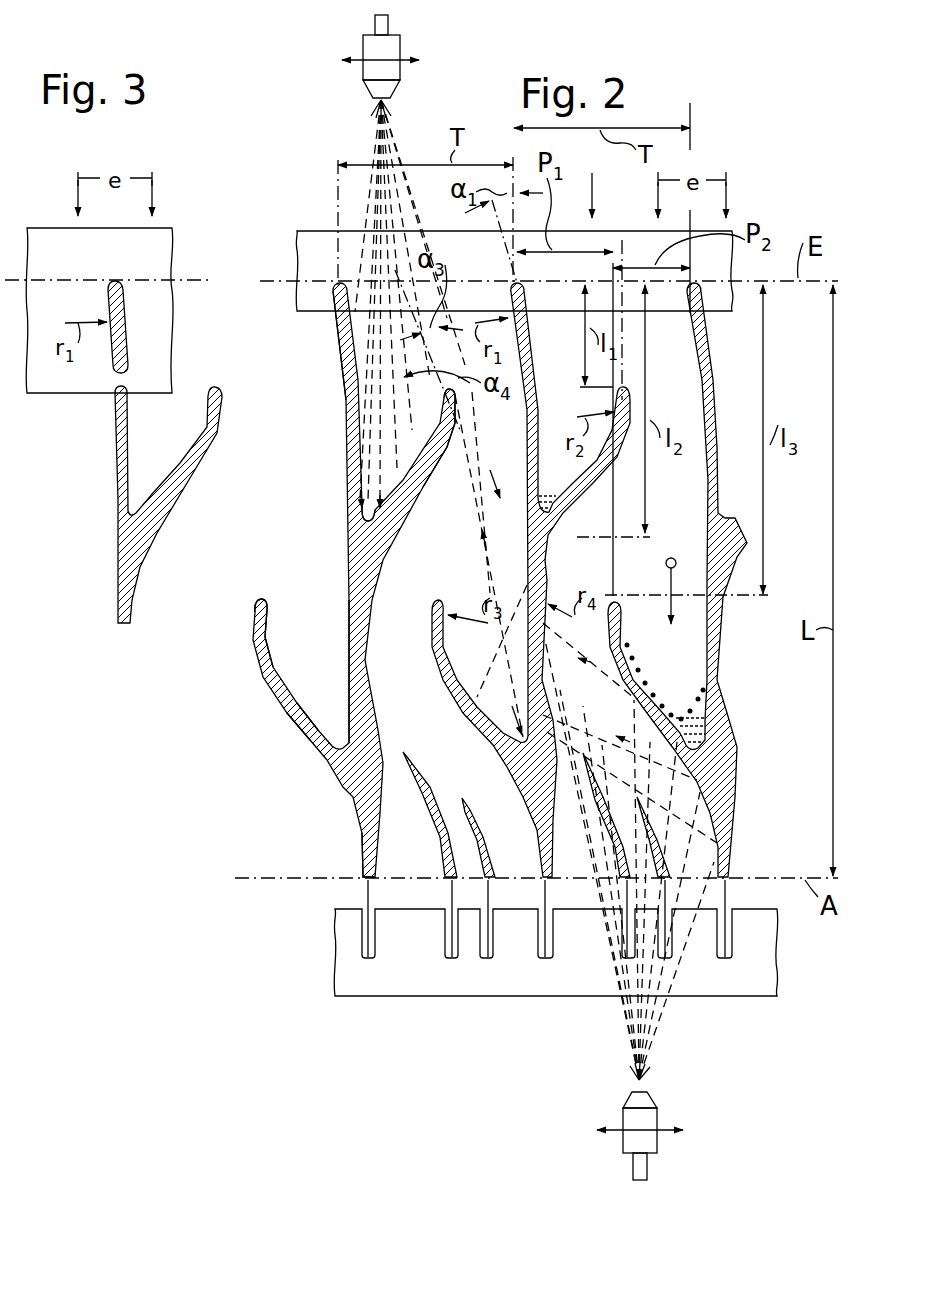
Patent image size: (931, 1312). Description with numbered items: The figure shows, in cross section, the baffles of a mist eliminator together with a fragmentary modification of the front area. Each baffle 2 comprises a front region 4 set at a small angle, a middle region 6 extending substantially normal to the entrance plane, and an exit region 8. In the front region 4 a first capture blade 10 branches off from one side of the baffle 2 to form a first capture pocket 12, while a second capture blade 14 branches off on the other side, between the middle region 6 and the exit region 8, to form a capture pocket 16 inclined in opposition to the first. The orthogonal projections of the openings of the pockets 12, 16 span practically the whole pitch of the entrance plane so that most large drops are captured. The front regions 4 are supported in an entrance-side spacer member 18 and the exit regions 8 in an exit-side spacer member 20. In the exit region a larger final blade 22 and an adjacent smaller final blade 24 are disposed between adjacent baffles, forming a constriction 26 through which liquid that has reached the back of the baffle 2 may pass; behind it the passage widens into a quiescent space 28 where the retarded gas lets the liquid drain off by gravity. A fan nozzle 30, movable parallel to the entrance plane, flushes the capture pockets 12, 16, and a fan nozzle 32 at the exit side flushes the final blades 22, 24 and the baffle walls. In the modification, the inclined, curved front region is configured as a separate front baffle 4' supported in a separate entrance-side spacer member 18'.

In FIG. 2, the baffle 2 is at (344, 540).
In FIG. 2, the front region 4 is at (324, 345).
In FIG. 2, the middle region 6 is at (352, 631).
In FIG. 2, the exit region 8 is at (367, 838).
In FIG. 2, the first capture blade 10 is at (430, 464).
In FIG. 2, the first capture pocket 12 is at (380, 490).
In FIG. 2, the second capture blade 14 is at (262, 657).
In FIG. 2, the capture pocket 16 is at (308, 740).
In FIG. 2, the entrance-side spacer member 18 is at (514, 245).
In FIG. 3, the entrance-side spacer member 18' is at (92, 284).
In FIG. 3, the front baffle 4' is at (165, 452).
In FIG. 2, the exit-side spacer member 20 is at (426, 976).
In FIG. 2, the final blade 22 is at (440, 795).
In FIG. 2, the final blade 24 is at (477, 826).
In FIG. 2, the constriction 26 is at (395, 752).
In FIG. 2, the quiescent space 28 is at (421, 866).
In FIG. 2, the fan nozzle 30 is at (390, 52).
In FIG. 2, the fan nozzle 32 is at (650, 1122).